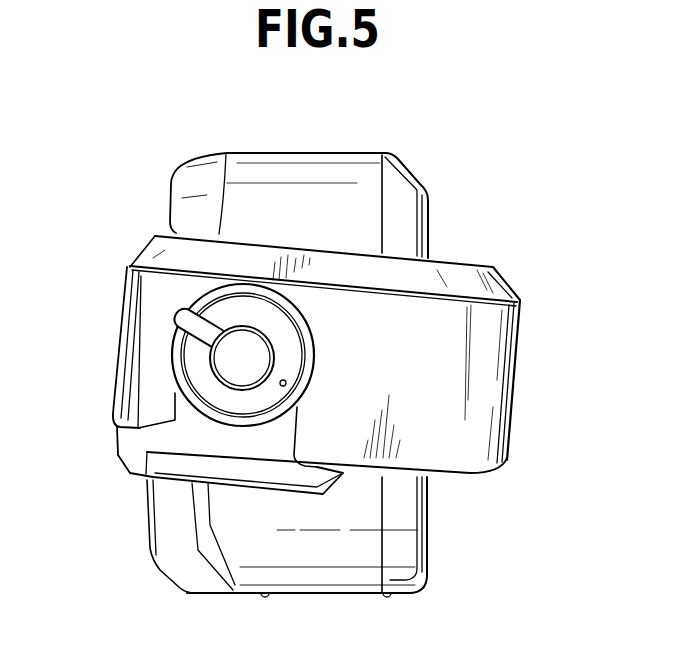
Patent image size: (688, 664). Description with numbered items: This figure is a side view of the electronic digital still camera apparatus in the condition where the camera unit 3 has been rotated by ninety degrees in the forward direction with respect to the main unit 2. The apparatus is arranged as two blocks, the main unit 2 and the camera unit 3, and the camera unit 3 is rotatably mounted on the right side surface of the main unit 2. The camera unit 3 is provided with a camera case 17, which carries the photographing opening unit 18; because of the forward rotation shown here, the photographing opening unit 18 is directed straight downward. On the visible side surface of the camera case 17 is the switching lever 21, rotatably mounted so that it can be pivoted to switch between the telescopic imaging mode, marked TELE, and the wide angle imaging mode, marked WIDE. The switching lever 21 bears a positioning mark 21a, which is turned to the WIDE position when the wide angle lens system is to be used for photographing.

The main unit 2 is at (339, 151).
The camera unit 3 is at (498, 262).
The camera case 17 is at (496, 382).
The photographing opening unit 18 is at (242, 485).
The switching lever 21 is at (228, 362).
The positioning mark 21a is at (285, 382).